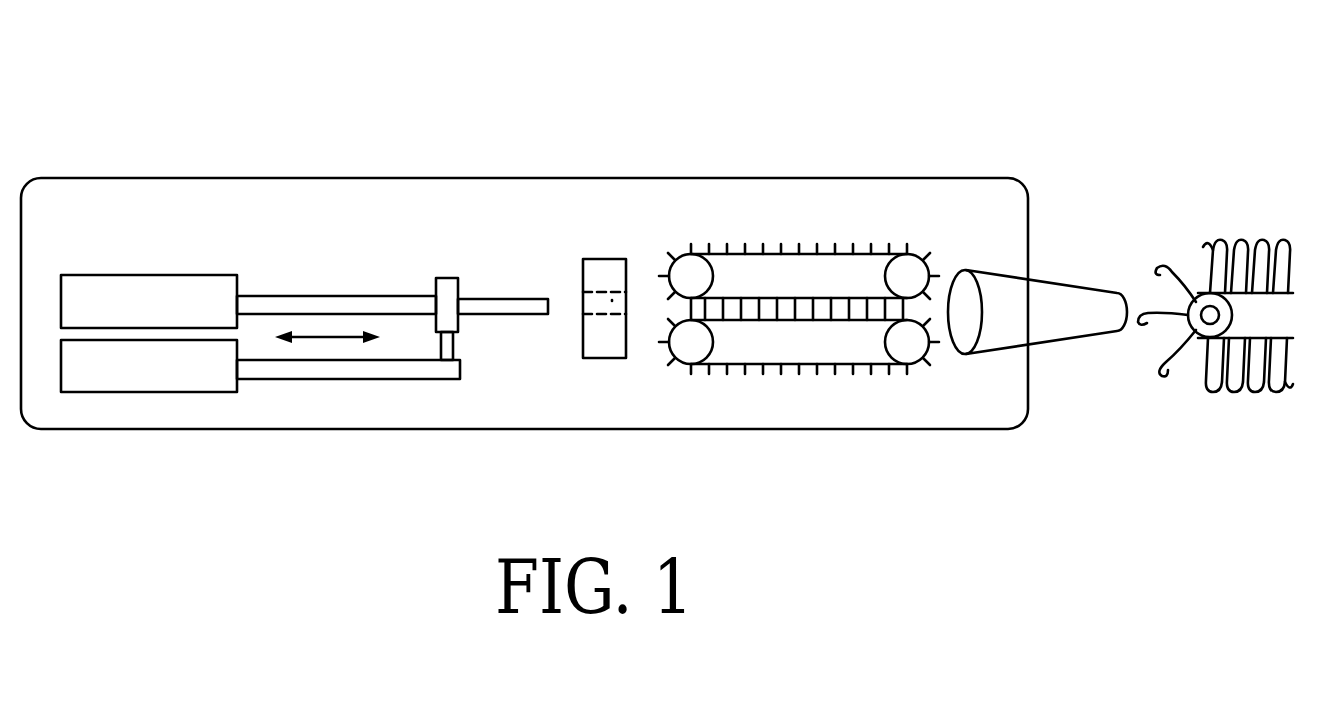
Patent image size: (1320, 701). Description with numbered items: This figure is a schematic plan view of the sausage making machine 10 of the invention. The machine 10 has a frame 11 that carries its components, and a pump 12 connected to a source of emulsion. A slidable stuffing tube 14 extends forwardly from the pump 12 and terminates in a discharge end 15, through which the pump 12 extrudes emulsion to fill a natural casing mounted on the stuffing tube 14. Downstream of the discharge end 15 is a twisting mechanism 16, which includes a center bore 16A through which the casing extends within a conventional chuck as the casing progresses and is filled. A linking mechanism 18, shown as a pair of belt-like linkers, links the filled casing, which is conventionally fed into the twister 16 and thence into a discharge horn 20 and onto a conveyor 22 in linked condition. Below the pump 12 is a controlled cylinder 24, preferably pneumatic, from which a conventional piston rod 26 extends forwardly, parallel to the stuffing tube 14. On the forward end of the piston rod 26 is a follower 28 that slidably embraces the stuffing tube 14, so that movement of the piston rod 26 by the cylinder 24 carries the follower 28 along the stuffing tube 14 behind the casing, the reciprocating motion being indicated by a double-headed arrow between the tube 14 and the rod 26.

The sausage making machine 10 is at (333, 108).
The frame 11 is at (232, 198).
The pump 12 is at (147, 292).
The stuffing tube 14 is at (336, 305).
The discharge end 15 is at (545, 298).
The twisting mechanism 16 is at (610, 275).
The center bore 16A is at (612, 300).
The linking mechanism 18 is at (732, 285).
The discharge horn 20 is at (1056, 303).
The conveyor 22 is at (1193, 290).
The controlled cylinder 24 is at (134, 366).
The piston rod 26 is at (333, 367).
The follower 28 is at (447, 278).